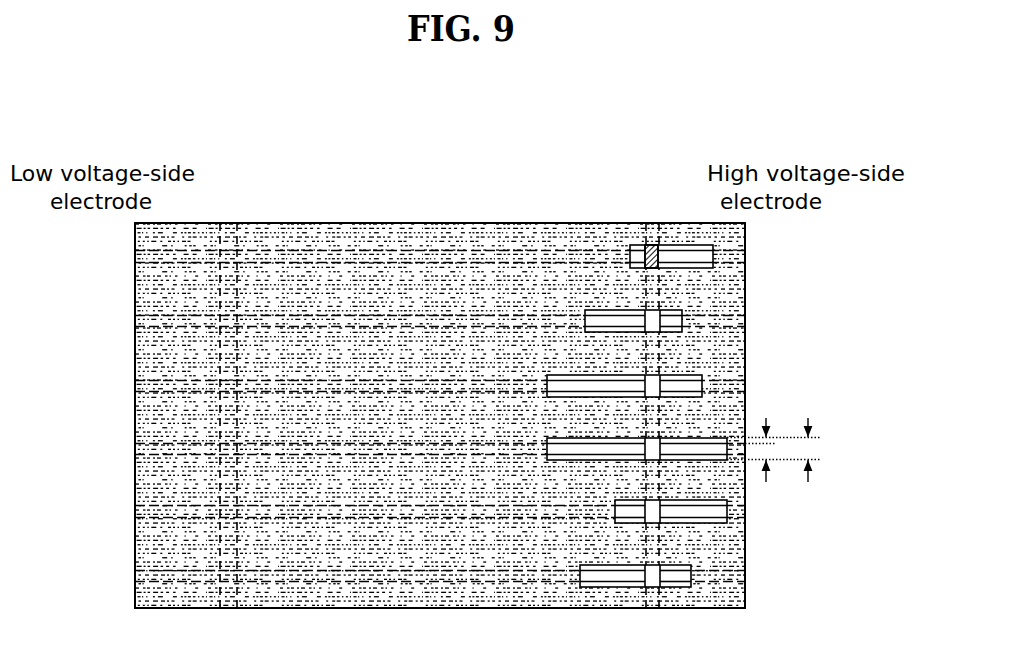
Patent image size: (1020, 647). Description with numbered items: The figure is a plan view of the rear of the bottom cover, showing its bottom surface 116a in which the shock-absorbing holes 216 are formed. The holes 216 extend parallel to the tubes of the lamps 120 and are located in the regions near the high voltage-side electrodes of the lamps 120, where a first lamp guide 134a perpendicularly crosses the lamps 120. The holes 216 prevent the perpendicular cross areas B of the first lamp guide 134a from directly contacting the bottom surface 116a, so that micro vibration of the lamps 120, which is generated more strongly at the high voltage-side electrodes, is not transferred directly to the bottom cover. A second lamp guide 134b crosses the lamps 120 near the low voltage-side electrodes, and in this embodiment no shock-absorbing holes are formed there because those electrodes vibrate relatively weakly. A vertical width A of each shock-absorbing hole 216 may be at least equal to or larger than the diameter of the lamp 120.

The bottom surface 116a is at (338, 222).
The second lamp guide 134b is at (228, 235).
The first lamp guide 134a is at (650, 232).
The lamp 120 is at (468, 256).
The shock-absorbing hole 216 is at (675, 372).
The perpendicular cross area B is at (652, 268).
The vertical width A is at (778, 450).